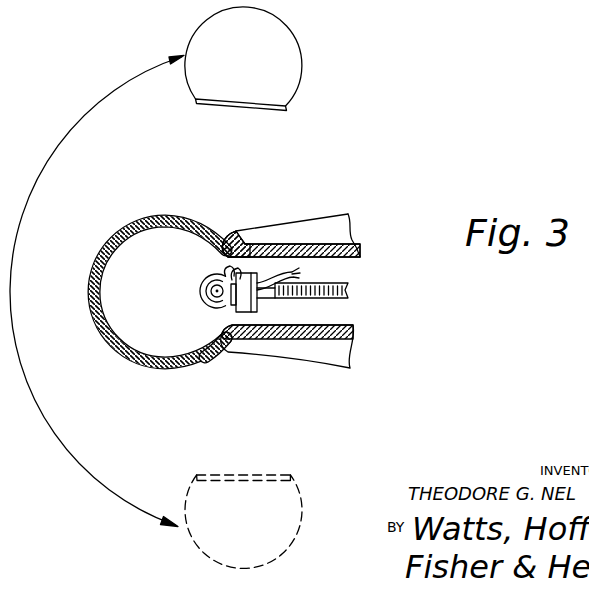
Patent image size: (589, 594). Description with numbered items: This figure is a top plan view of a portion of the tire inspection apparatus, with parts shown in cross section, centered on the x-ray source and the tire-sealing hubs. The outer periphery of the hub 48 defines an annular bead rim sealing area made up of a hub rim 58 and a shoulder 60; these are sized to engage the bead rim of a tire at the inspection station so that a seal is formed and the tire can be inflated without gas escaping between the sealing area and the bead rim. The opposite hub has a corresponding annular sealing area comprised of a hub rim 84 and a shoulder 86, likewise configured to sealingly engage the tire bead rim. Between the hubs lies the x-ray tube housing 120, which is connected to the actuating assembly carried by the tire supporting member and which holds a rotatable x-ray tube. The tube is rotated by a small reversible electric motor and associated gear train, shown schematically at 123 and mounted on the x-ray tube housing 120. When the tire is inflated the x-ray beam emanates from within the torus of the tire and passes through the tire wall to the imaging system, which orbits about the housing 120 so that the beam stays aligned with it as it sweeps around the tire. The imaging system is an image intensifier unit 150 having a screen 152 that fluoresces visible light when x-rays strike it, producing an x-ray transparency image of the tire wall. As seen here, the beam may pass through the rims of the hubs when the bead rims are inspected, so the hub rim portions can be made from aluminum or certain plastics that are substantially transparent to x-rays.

The hub 48 is at (313, 223).
The hub rim 58 is at (224, 243).
The shoulder 60 is at (225, 255).
The hub rim 84 is at (225, 342).
The shoulder 86 is at (226, 325).
The x-ray tube housing 120 is at (201, 296).
The reversible electric motor and gear train 123 is at (246, 314).
The image intensifier unit 150 is at (283, 57).
The screen 152 is at (277, 109).